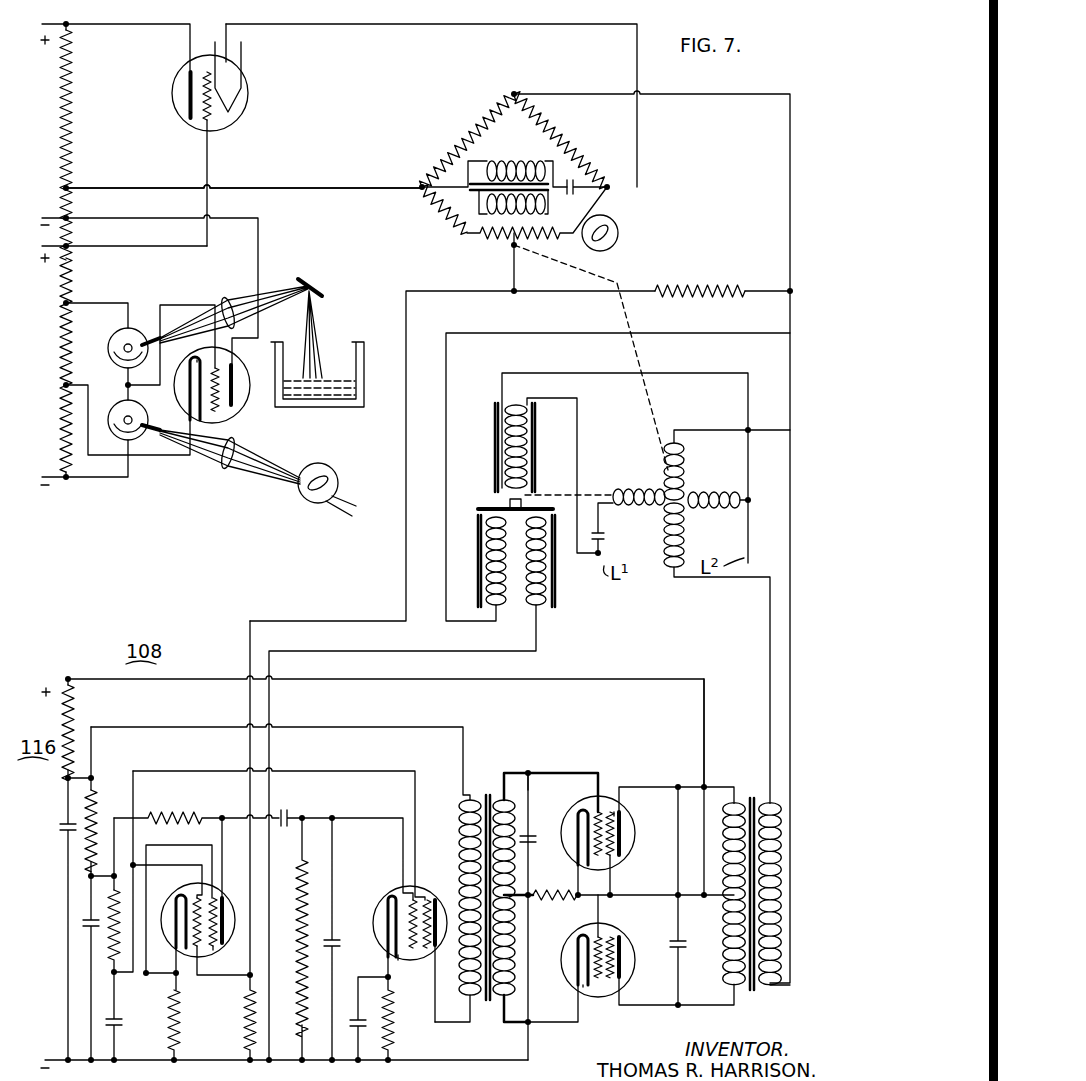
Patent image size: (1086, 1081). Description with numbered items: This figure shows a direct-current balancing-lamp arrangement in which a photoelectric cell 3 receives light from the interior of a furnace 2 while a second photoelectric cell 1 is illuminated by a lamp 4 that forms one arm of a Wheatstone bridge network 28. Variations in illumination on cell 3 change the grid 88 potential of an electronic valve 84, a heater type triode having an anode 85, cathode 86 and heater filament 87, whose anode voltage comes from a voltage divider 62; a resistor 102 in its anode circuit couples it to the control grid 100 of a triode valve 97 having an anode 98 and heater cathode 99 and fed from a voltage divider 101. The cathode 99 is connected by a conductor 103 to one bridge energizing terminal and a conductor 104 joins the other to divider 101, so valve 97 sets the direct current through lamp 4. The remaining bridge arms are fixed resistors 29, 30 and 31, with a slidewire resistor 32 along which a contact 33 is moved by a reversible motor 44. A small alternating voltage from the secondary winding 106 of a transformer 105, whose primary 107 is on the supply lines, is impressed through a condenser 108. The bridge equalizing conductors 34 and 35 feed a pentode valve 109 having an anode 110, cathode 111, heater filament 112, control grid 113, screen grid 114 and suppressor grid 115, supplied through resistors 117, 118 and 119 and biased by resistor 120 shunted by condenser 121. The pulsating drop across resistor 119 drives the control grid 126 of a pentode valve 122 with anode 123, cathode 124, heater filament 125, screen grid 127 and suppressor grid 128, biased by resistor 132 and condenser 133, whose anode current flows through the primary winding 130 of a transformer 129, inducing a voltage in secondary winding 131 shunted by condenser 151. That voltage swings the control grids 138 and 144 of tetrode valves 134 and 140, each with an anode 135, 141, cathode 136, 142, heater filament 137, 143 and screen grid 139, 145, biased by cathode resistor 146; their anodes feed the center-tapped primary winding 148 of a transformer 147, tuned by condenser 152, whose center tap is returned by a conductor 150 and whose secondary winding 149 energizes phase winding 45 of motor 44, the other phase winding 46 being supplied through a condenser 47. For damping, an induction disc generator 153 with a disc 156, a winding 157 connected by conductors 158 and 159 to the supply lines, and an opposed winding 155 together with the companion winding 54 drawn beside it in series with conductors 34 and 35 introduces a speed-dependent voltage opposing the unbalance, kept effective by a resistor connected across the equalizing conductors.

The photoelectric cell 1 is at (148, 418).
The furnace 2 is at (340, 338).
The photoelectric cell 3 is at (118, 336).
The lamp 4 is at (336, 466).
The Wheatstone bridge network 28 is at (525, 140).
The fixed resistor 29 is at (458, 130).
The fixed resistor 30 is at (552, 130).
The fixed resistor 31 is at (440, 228).
The slidewire resistor 32 is at (500, 240).
The contact 33 is at (512, 260).
The bridge equalizing conductor 34 is at (510, 334).
The bridge equalizing conductor 35 is at (410, 322).
The reversible motor 44 is at (638, 468).
The phase winding 45 is at (684, 535).
The phase winding 46 is at (700, 500).
The condenser 47 is at (606, 540).
The relay winding 54 is at (528, 600).
The voltage divider 62 is at (62, 358).
The electronic valve 84 is at (240, 410).
The anode 85 is at (234, 372).
The cathode 86 is at (188, 396).
The heater filament 87 is at (198, 361).
The control grid 88 is at (218, 412).
The electronic valve 97 is at (245, 78).
The anode 98 is at (188, 74).
The heater cathode 99 is at (234, 105).
The control grid 100 is at (203, 108).
The voltage divider 101 is at (72, 105).
The resistor 102 is at (72, 237).
The conductor 103 is at (414, 30).
The conductor 104 is at (334, 188).
The transformer 105 is at (462, 200).
The secondary winding 106 is at (505, 160).
The primary winding 107 is at (525, 218).
The condenser 108 is at (580, 212).
The valve 109 is at (170, 940).
The anode 110 is at (232, 890).
The cathode 111 is at (178, 900).
The heater filament 112 is at (197, 896).
The control grid 113 is at (208, 862).
The screen grid 114 is at (205, 958).
The suppressor grid 115 is at (212, 950).
The resistor 117 is at (74, 722).
The resistor 118 is at (98, 812).
The resistor 119 is at (170, 812).
The biasing resistor 120 is at (180, 1024).
The condenser 121 is at (122, 1022).
The valve 122 is at (378, 918).
The anode 123 is at (430, 900).
The cathode 124 is at (388, 900).
The heater filament 125 is at (407, 896).
The control grid 126 is at (392, 962).
The screen grid 127 is at (400, 955).
The suppressor grid 128 is at (424, 888).
The transformer 129 is at (476, 792).
The primary winding 130 is at (460, 812).
The secondary winding 131 is at (544, 762).
The biasing resistor 132 is at (392, 1026).
The condenser 133 is at (356, 1020).
The valve 134 is at (628, 980).
The anode 135 is at (622, 946).
The cathode 136 is at (576, 978).
The heater filament 137 is at (584, 992).
The control grid 138 is at (602, 932).
The screen grid 139 is at (608, 980).
The valve 140 is at (632, 840).
The anode 141 is at (622, 820).
The cathode 142 is at (574, 812).
The heater filament 143 is at (596, 802).
The control grid 144 is at (610, 810).
The screen grid 145 is at (614, 810).
The cathode biasing resistor 146 is at (548, 890).
The transformer 147 is at (764, 800).
The primary winding 148 is at (728, 800).
The secondary winding 149 is at (788, 996).
The conductor 150 is at (708, 710).
The condenser 151 is at (536, 848).
The condenser 152 is at (692, 932).
The induction disc generator 153 is at (482, 425).
The winding 155 is at (500, 595).
The disc 156 is at (494, 507).
The winding 157 is at (512, 414).
The conductor 158 is at (560, 370).
The conductor 159 is at (678, 290).